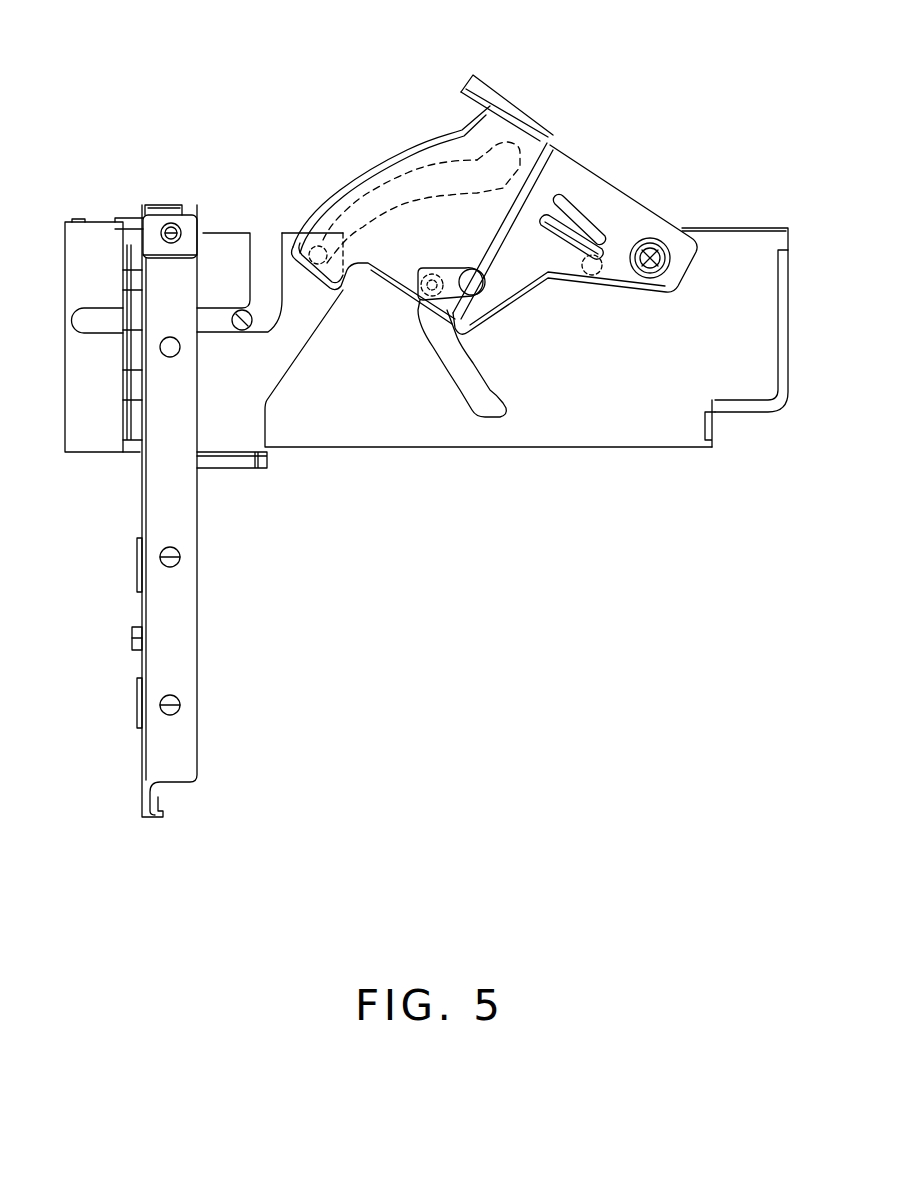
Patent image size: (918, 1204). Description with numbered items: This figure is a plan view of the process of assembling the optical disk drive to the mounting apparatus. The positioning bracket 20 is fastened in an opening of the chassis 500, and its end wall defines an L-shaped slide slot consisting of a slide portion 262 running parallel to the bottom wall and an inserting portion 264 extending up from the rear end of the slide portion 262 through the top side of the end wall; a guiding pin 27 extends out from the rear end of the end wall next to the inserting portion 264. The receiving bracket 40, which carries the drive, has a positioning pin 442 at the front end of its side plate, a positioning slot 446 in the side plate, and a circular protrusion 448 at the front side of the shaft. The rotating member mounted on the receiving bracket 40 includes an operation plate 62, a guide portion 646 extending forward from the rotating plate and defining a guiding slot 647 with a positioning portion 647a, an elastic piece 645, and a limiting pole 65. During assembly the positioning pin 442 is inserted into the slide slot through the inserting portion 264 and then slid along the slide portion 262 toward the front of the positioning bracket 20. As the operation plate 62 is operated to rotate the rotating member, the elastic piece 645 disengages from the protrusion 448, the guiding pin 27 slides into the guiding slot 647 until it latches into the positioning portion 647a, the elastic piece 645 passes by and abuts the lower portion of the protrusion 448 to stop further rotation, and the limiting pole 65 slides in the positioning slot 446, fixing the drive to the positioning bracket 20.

The positioning bracket 20 is at (240, 420).
The guiding pin 27 is at (317, 250).
The receiving bracket 40 is at (625, 410).
The operation plate 62 is at (480, 90).
The limiting pole 65 is at (421, 300).
The slide portion 262 is at (103, 322).
The inserting portion 264 is at (268, 246).
The positioning pin 442 is at (242, 320).
The positioning slot 446 is at (477, 390).
The circular protrusion 448 is at (603, 268).
The chassis 500 is at (168, 605).
The elastic piece 645 is at (585, 233).
The guide portion 646 is at (425, 155).
The guiding slot 647 is at (383, 200).
The positioning portion 647a is at (507, 157).